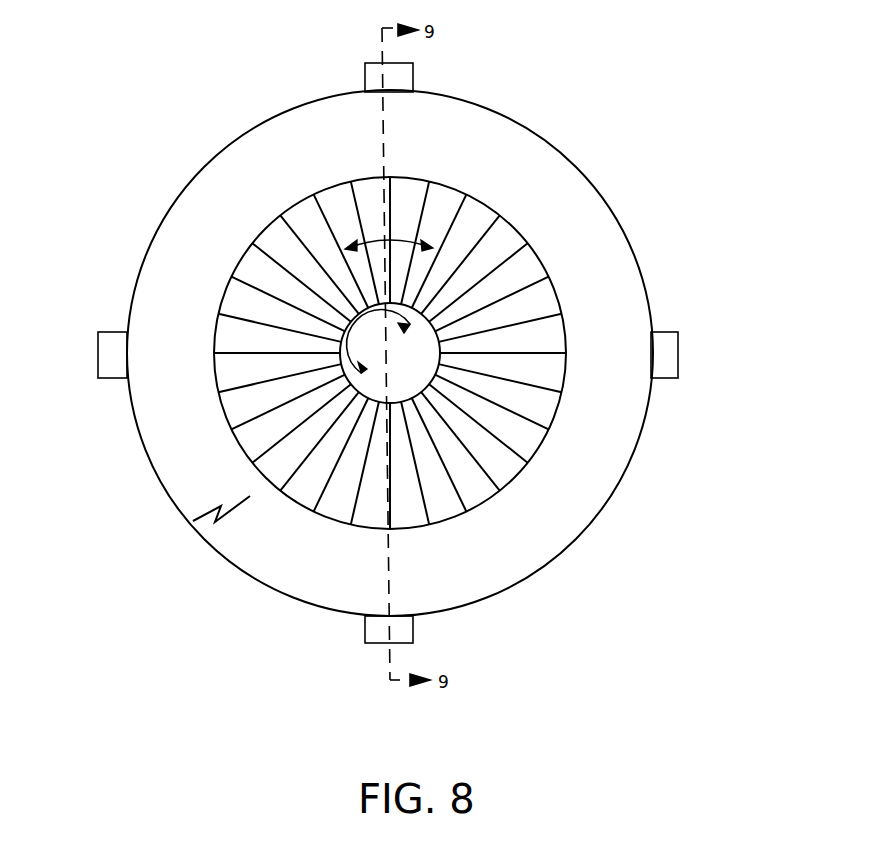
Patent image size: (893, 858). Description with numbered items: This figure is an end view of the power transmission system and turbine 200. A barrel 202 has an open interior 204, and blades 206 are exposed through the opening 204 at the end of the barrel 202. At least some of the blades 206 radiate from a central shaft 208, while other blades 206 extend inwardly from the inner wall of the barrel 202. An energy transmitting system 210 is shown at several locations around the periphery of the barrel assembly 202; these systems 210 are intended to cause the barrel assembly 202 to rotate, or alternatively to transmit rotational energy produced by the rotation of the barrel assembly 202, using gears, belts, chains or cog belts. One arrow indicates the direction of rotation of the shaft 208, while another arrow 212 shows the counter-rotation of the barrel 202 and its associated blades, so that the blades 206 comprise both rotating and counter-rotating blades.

The power transmission system and turbine 200 is at (636, 168).
The barrel 202 is at (612, 242).
The open interior 204 is at (528, 428).
The blades 206 is at (483, 485).
The shaft 208 is at (390, 353).
The energy transmitting system 210 is at (413, 68).
The arrow 212 is at (414, 230).